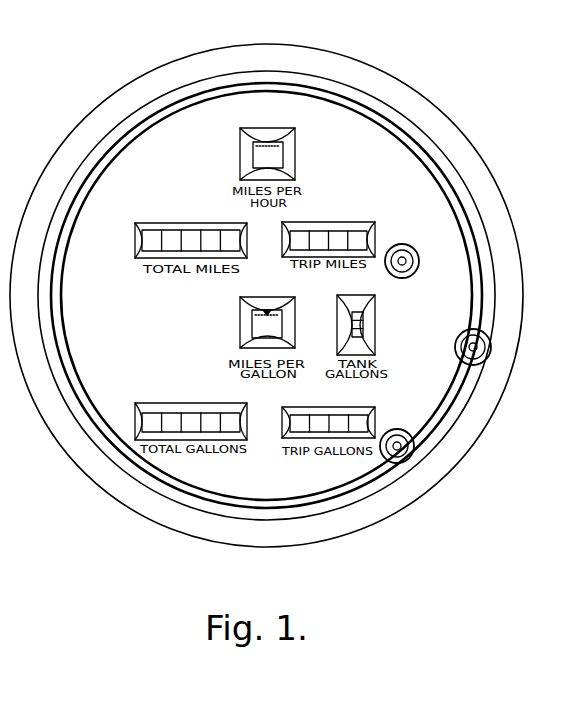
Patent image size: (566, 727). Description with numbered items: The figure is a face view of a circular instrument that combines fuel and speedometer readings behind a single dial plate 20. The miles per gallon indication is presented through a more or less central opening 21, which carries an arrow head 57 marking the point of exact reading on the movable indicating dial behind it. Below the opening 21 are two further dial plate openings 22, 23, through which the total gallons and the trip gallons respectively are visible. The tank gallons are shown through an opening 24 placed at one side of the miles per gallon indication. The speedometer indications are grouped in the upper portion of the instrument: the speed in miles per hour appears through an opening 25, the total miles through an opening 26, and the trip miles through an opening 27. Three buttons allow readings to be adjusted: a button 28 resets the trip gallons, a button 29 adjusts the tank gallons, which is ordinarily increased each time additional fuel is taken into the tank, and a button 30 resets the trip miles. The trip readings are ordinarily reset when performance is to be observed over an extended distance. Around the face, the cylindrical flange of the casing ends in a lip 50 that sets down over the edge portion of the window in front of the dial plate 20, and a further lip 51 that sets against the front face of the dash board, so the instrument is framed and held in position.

The dial plate 20 is at (412, 401).
The central opening 21 is at (252, 334).
The dial plate opening 22 is at (170, 414).
The dial plate opening 23 is at (333, 413).
The opening 24 is at (352, 325).
The opening 25 is at (277, 161).
The opening 26 is at (160, 240).
The opening 27 is at (331, 238).
The button 28 is at (411, 456).
The button 29 is at (481, 348).
The button 30 is at (420, 259).
The lip 50 is at (193, 491).
The lip 51 is at (146, 501).
The arrow head 57 is at (267, 310).